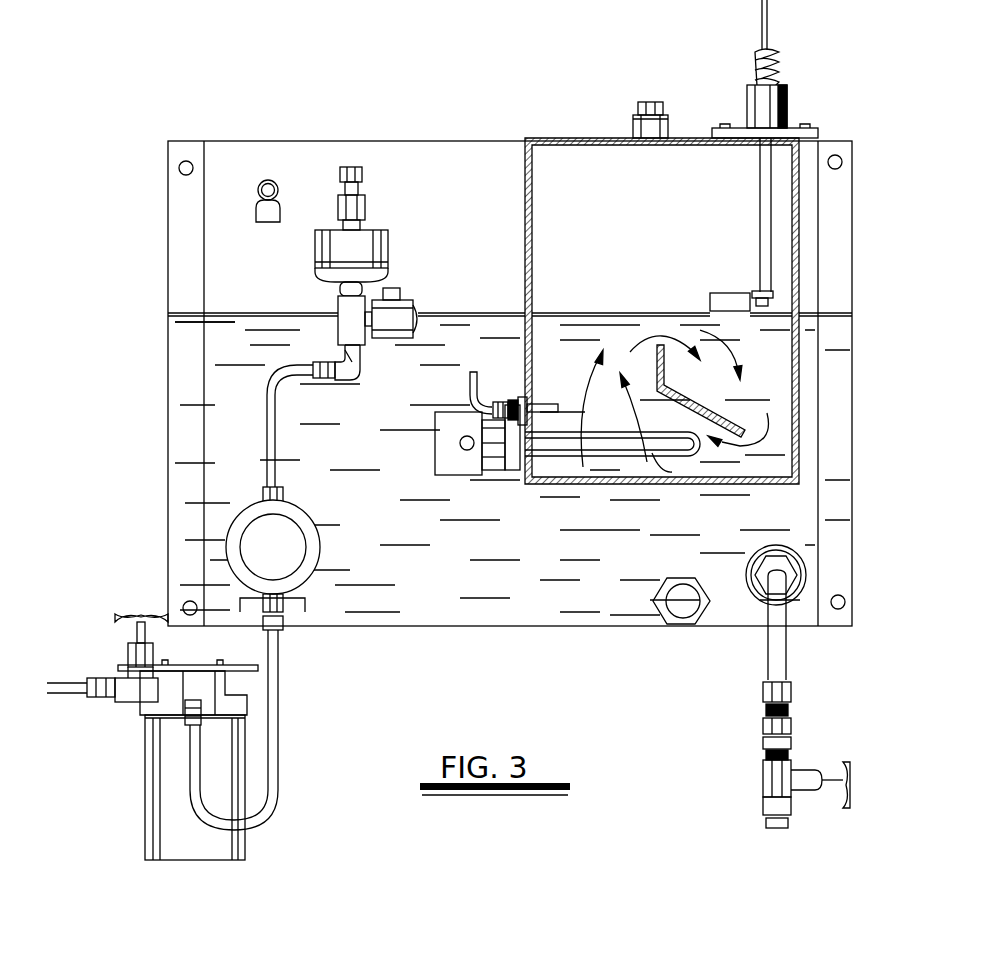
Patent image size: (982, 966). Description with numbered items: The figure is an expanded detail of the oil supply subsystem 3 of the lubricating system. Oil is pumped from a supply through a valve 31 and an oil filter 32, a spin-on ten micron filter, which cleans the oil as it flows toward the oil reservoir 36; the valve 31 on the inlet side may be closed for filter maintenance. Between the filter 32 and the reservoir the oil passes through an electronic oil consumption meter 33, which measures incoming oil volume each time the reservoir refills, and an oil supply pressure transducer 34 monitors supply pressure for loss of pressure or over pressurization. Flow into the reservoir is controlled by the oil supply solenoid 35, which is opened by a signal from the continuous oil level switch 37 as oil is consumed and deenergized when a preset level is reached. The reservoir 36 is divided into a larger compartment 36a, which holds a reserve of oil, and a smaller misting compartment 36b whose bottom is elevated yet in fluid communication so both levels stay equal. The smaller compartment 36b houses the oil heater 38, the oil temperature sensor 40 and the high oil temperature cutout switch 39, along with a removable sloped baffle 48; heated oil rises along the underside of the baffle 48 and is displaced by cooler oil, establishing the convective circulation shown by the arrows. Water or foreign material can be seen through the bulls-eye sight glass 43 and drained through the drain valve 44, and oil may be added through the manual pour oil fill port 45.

The oil supply subsystem 3 is at (436, 122).
The valve 31 is at (140, 688).
The oil filter 32 is at (193, 847).
The electronic oil consumption meter 33 is at (285, 548).
The oil supply pressure transducer 34 is at (345, 247).
The oil supply solenoid 35 is at (398, 313).
The oil reservoir 36 is at (478, 608).
The larger compartment 36a is at (225, 427).
The smaller compartment 36b is at (787, 447).
The continuous oil level switch 37 is at (766, 104).
The oil heater 38 is at (578, 460).
The high oil temperature cutout switch 39 is at (496, 402).
The oil temperature sensor 40 is at (513, 398).
The bulls-eye sight glass 43 is at (688, 603).
The drain valve 44 is at (780, 790).
The manual pour oil fill port 45 is at (645, 123).
The removable baffle 48 is at (728, 415).